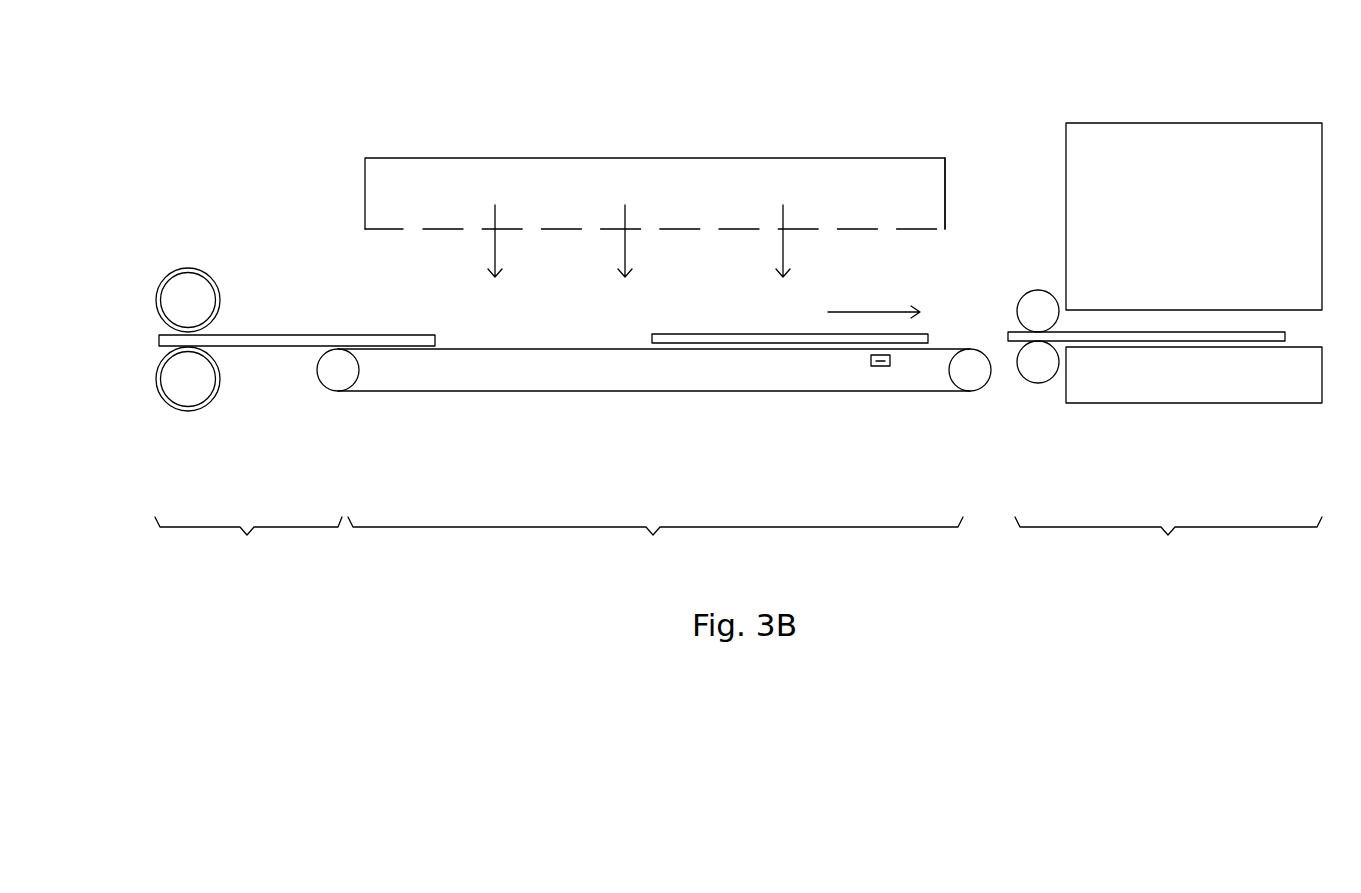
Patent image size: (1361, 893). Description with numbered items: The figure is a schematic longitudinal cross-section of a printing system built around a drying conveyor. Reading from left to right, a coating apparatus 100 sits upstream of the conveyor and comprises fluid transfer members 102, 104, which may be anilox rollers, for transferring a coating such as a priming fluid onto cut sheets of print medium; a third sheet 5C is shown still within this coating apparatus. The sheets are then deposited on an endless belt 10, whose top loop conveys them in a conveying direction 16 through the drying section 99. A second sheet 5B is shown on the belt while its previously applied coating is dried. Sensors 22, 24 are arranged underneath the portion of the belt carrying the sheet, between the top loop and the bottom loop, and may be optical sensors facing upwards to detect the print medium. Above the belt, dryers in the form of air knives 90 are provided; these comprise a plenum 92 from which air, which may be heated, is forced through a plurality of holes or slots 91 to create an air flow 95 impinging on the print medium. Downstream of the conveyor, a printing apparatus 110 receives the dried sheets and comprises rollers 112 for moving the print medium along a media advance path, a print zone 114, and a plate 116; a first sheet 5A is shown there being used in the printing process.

The air knives 90 is at (647, 157).
The holes or slots 91 is at (411, 229).
The plenum 92 is at (914, 183).
The air flow 95 is at (658, 241).
The conveying direction 16 is at (874, 296).
The fluid transfer member 104 is at (193, 298).
The fluid transfer member 102 is at (193, 382).
The third sheet 5C is at (277, 333).
The second sheet 5B is at (727, 336).
The first sheet 5A is at (1142, 334).
The endless belt 10 is at (548, 349).
The sensor 22 is at (845, 410).
The sensor 24 is at (870, 363).
The rollers 112 is at (1040, 358).
The print zone 114 is at (1107, 205).
The plate 116 is at (1245, 368).
The coating apparatus 100 is at (248, 545).
The treatment section 99 is at (655, 545).
The printing apparatus 110 is at (1168, 544).